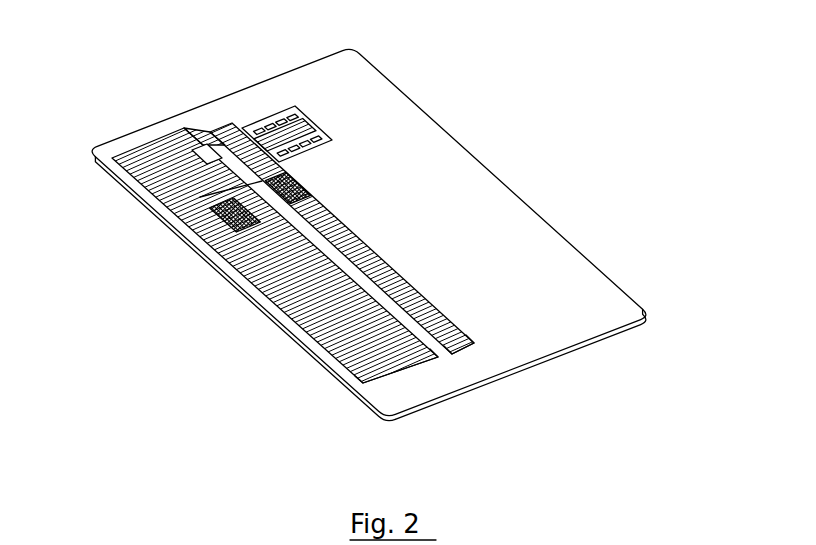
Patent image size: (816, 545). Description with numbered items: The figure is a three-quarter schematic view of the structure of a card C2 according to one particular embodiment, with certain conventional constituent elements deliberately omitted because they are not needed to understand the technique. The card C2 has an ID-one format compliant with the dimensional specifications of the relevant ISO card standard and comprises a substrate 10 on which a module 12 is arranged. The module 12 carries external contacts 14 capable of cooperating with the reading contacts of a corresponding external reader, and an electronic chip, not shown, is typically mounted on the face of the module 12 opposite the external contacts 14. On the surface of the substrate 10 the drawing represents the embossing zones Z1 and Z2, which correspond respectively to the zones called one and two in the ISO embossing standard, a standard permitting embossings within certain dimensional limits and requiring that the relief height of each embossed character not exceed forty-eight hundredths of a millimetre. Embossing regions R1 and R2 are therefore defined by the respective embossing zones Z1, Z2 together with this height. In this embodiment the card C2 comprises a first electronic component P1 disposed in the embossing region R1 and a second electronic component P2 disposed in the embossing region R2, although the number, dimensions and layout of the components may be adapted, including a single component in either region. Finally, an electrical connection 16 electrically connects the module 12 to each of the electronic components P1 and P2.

The card C2 is at (568, 96).
The substrate 10 is at (507, 198).
The module 12 is at (303, 95).
The external contacts 14 is at (330, 126).
The electrical connection 16 is at (206, 150).
The first electronic component P1 is at (200, 197).
The second electronic component P2 is at (199, 250).
The embossing zone Z1 is at (393, 268).
The embossing zone Z2 is at (296, 317).
The embossing region R1 is at (435, 297).
The embossing region R2 is at (411, 365).